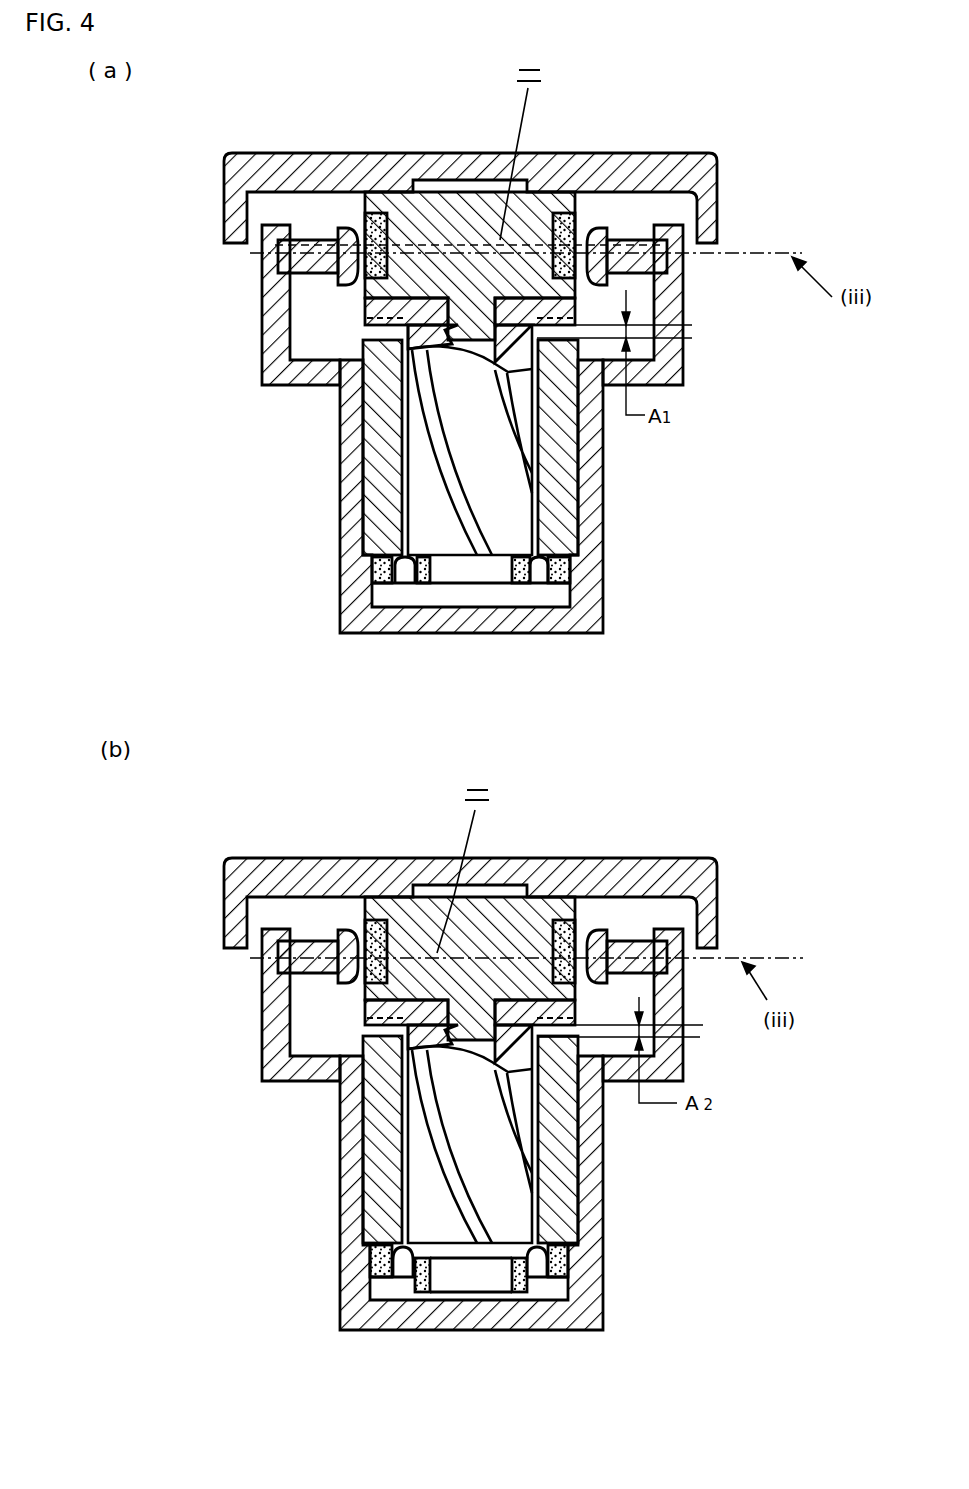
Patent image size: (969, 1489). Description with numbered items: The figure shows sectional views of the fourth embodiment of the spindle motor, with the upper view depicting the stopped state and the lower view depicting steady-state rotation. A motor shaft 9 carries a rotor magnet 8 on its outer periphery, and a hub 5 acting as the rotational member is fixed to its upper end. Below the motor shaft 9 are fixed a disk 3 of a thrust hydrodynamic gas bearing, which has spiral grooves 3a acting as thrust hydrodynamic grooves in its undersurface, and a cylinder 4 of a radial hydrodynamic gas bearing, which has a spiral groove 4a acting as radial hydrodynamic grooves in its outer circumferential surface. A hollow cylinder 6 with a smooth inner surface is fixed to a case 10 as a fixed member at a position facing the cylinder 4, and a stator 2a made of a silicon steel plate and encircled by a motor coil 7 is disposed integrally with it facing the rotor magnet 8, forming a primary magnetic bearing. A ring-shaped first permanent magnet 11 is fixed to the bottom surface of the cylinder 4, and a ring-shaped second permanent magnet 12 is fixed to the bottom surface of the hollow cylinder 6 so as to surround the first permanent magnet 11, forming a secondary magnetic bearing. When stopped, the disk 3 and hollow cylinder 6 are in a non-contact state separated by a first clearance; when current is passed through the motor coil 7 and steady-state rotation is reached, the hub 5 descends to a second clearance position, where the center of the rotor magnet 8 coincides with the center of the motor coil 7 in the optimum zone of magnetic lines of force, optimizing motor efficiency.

The stator 2a is at (631, 242).
The disk 3 is at (400, 319).
The spiral grooves 3a is at (386, 327).
The cylinder 4 is at (467, 458).
The spiral groove 4a is at (443, 474).
The hub 5 is at (652, 168).
The hollow cylinder 6 is at (563, 498).
The motor coil 7 is at (297, 227).
The rotor magnet 8 is at (366, 214).
The motor shaft 9 is at (452, 200).
The case 10 is at (350, 617).
The first permanent magnet 11 is at (520, 563).
The second permanent magnet 12 is at (378, 578).